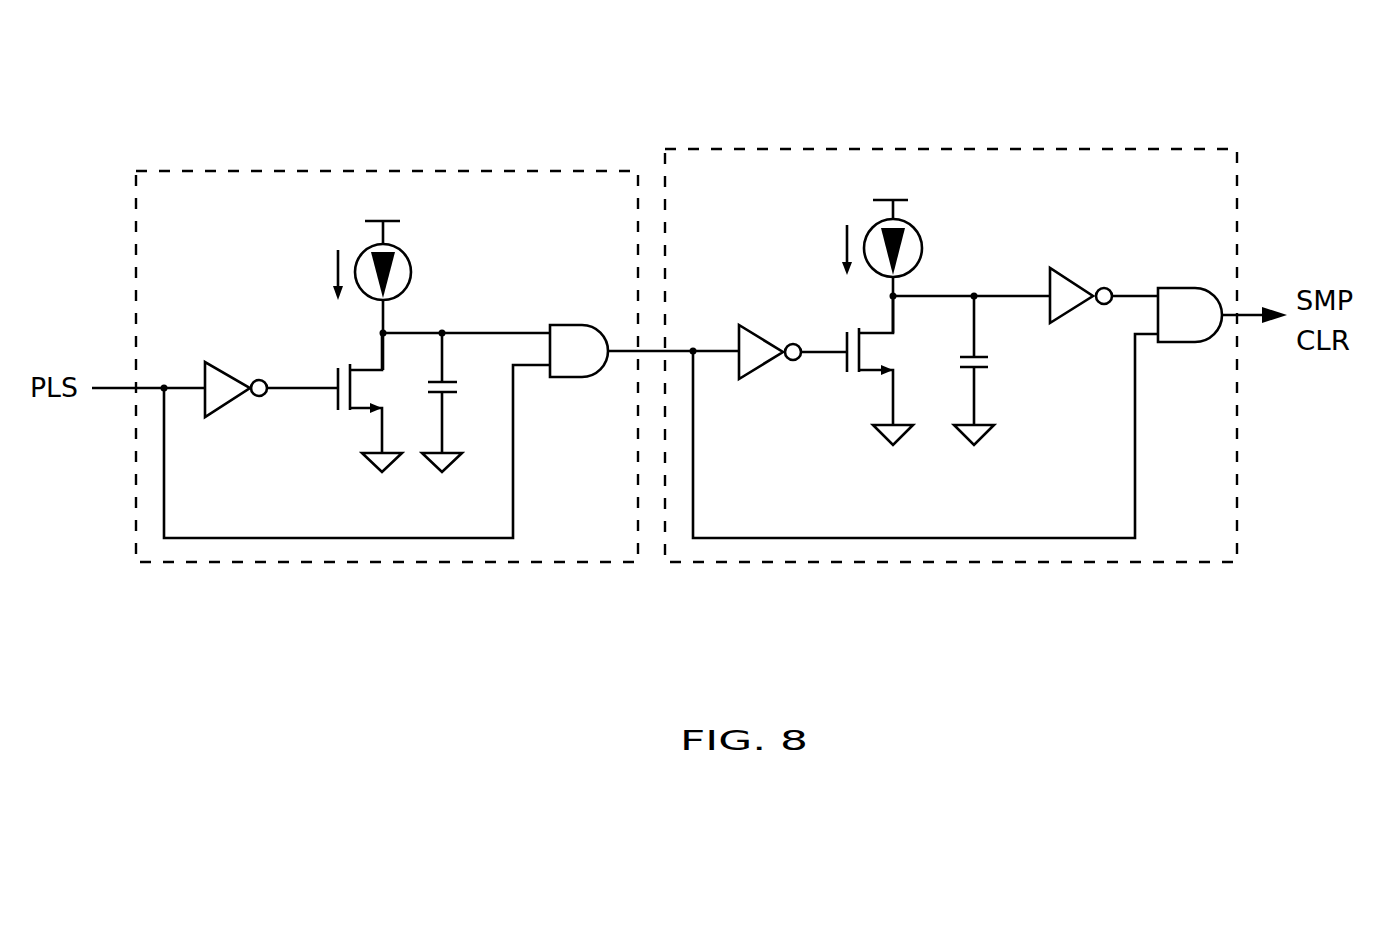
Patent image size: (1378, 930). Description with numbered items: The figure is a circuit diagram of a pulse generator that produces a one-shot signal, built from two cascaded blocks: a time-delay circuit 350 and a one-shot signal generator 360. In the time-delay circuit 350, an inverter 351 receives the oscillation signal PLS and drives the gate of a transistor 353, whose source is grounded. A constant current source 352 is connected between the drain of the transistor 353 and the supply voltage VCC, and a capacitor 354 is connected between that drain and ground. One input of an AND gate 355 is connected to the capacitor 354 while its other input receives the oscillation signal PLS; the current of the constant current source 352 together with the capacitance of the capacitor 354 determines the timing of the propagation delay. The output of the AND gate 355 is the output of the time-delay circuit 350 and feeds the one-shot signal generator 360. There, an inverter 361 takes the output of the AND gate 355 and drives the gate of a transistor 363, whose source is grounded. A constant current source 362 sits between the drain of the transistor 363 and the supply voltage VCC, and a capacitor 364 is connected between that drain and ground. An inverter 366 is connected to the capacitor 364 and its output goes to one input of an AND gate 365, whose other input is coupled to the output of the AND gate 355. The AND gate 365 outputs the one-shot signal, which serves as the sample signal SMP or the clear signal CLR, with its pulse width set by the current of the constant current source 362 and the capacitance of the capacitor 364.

The time-delay circuit 350 is at (218, 170).
The inverter 351 is at (232, 362).
The constant current source 352 is at (411, 272).
The transistor 353 is at (350, 412).
The capacitor 354 is at (457, 392).
The AND gate 355 is at (572, 325).
The one-shot signal generator 360 is at (1133, 149).
The inverter 361 is at (757, 326).
The constant current source 362 is at (922, 248).
The transistor 363 is at (859, 374).
The capacitor 364 is at (988, 367).
The AND gate 365 is at (1180, 342).
The inverter 366 is at (1072, 268).